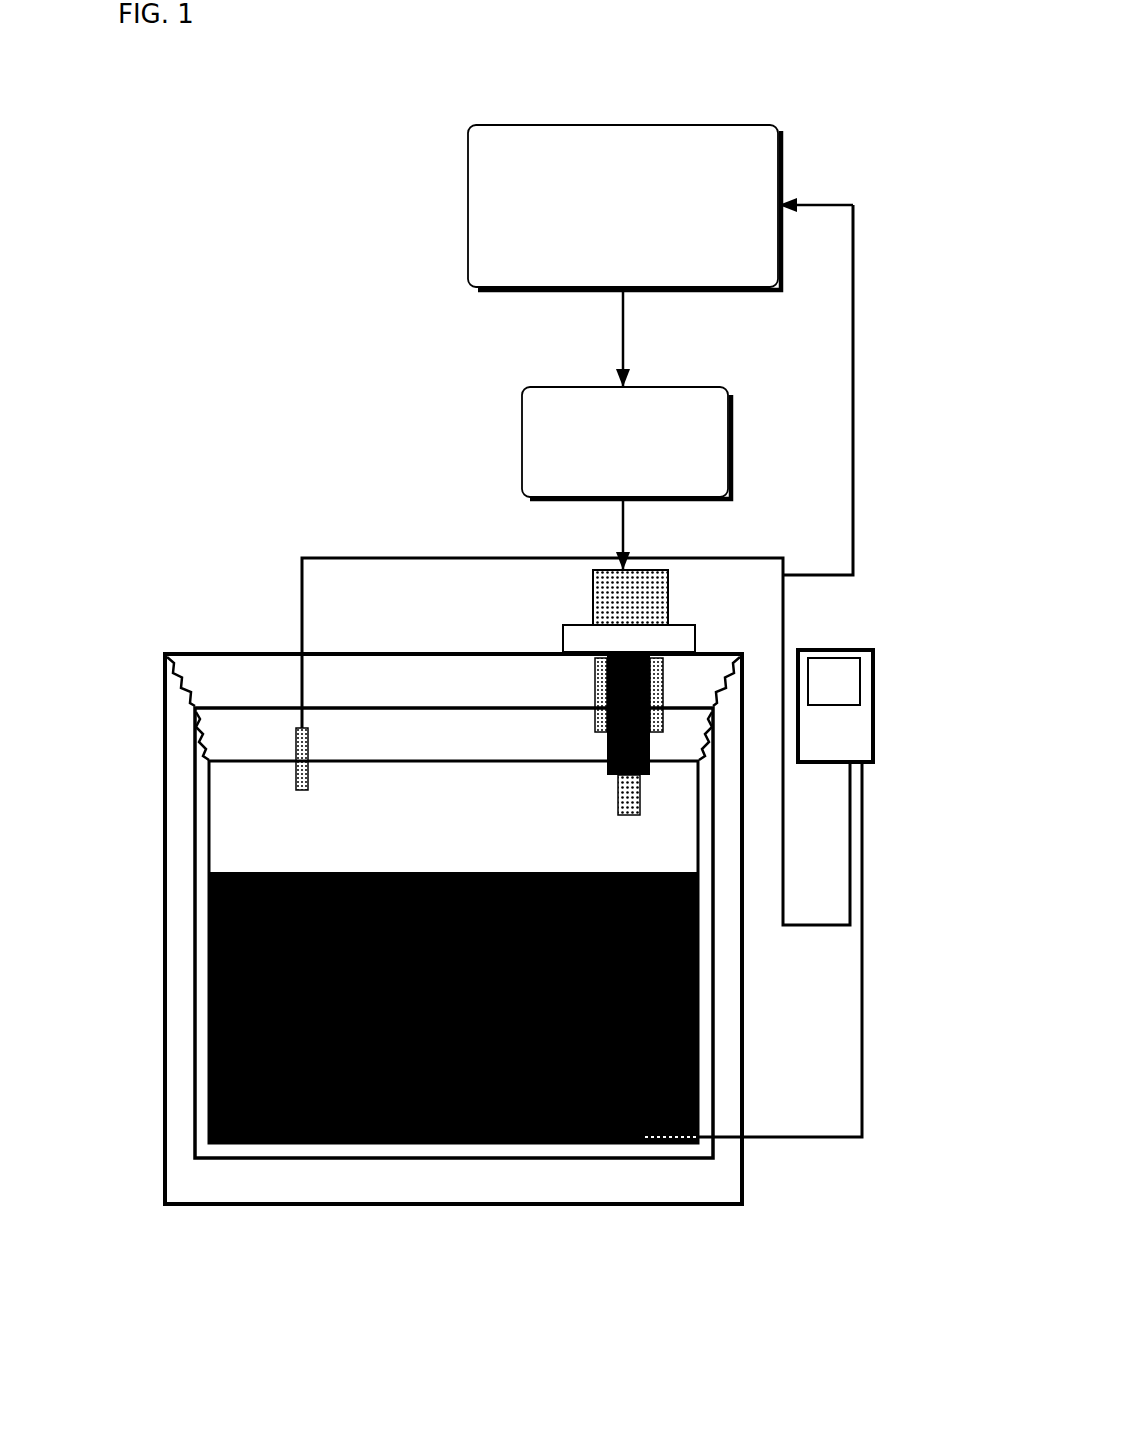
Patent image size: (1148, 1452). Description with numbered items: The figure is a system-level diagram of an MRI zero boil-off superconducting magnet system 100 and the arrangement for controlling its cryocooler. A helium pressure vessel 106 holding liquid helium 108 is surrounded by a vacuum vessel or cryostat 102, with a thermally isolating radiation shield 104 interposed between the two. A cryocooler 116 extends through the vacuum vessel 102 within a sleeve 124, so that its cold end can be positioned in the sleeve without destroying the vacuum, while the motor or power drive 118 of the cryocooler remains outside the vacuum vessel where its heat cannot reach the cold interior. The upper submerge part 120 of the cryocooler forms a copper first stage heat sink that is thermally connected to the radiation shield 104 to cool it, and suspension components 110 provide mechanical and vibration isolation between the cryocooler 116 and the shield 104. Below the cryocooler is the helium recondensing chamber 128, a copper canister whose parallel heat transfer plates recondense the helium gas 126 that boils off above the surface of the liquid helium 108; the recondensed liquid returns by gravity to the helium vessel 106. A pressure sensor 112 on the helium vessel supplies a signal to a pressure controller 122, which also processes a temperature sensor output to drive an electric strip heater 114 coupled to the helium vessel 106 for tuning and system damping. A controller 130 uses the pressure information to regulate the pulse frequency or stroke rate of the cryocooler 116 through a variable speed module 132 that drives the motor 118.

The MRI zero boil-off superconducting magnet system 100 is at (555, 1272).
The vacuum vessel or cryostat 102 is at (743, 975).
The thermally isolating radiation shield 104 is at (710, 1030).
The helium pressure vessel 106 is at (272, 1145).
The liquid helium 108 is at (412, 872).
The suspension components 110 is at (200, 705).
The pressure sensor 112 is at (310, 735).
The electric strip heater 114 is at (587, 1143).
The cryocooler 116 is at (565, 577).
The motor or power drive 118 is at (650, 580).
The upper submerge part of cryocooler (first stage thermal sleeve or heat sink) 120 is at (604, 743).
The pressure controller 122 is at (824, 650).
The sleeve 124 is at (700, 636).
The helium gas 126 is at (222, 852).
The helium recondensing chamber 128 is at (615, 787).
The controller 130 is at (468, 207).
The variable speed module 132 is at (522, 442).